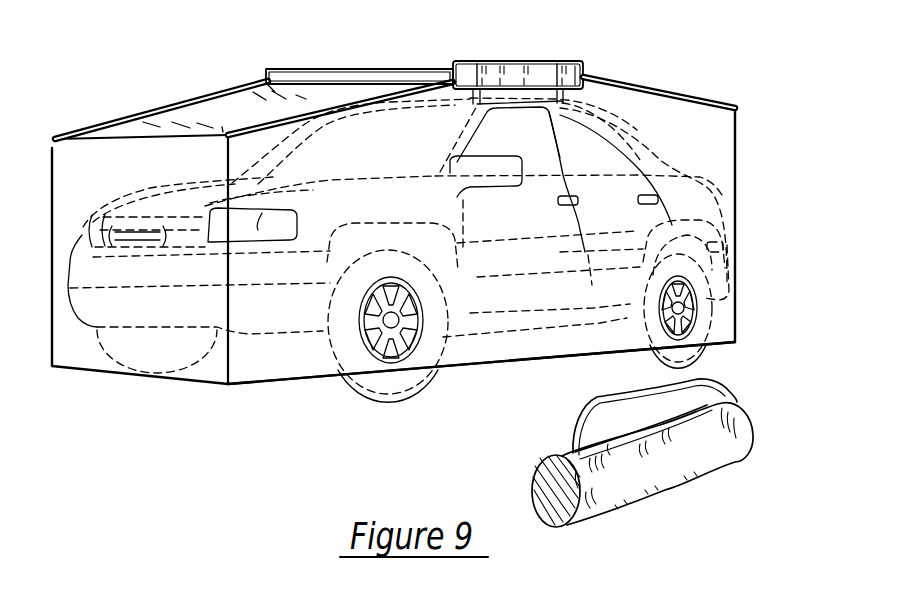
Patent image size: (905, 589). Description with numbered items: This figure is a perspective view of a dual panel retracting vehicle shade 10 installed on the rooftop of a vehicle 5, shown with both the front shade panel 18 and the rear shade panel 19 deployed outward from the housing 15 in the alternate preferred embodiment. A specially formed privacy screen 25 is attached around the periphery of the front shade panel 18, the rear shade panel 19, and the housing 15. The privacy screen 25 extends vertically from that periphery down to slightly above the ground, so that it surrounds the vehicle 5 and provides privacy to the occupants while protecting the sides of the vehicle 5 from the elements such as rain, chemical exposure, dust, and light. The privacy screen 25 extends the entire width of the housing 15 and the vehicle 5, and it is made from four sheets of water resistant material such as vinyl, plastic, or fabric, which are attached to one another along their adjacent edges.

The vehicle 5 is at (532, 323).
The vehicle cover assembly 10 is at (781, 70).
The housing 15 is at (463, 63).
The right roof panel 18 is at (647, 87).
The rear shade panel 19 is at (197, 108).
The privacy screen 25 is at (735, 179).